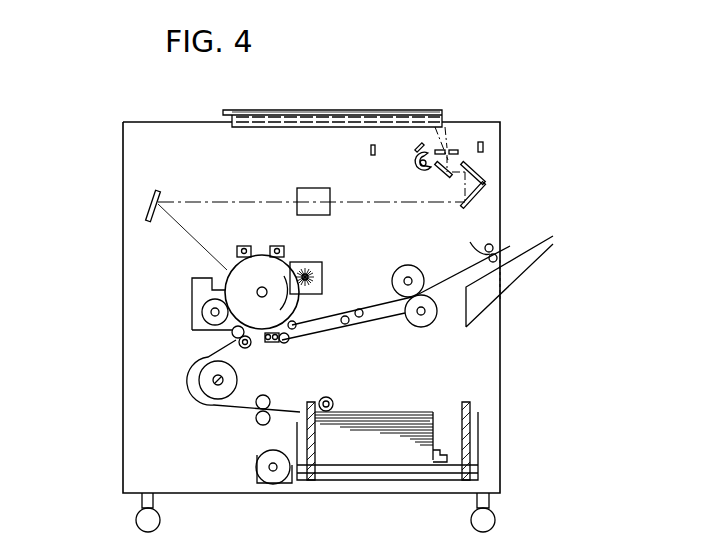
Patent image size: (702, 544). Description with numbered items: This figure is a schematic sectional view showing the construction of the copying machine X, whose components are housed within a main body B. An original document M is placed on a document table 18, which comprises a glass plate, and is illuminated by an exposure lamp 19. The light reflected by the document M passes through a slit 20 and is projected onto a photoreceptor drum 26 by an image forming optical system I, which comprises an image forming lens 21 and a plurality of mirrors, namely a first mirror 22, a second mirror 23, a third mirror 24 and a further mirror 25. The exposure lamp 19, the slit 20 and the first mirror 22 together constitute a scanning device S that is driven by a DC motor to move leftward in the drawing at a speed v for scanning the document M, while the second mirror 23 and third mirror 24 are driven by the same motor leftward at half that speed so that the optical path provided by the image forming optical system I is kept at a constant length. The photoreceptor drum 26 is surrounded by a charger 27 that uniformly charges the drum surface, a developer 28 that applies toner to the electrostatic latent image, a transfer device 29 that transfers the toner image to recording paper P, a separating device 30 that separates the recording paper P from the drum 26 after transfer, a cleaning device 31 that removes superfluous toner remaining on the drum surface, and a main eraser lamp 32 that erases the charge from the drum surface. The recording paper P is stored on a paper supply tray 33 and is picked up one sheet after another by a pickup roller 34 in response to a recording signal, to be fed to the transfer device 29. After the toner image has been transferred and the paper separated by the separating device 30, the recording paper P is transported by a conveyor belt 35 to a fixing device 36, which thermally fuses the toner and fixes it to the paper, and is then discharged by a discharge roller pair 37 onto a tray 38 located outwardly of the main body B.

The copying machine X is at (100, 148).
The main body B is at (502, 344).
The original document M is at (405, 118).
The scanning device S is at (470, 160).
The image forming optical system I is at (486, 219).
The recording paper P is at (398, 412).
The document table 18 is at (270, 128).
The exposure lamp 19 is at (415, 158).
The slit 20 is at (447, 147).
The image forming lens 21 is at (312, 188).
The first mirror 22 is at (440, 172).
The second mirror 23 is at (484, 176).
The third mirror 24 is at (482, 194).
The mirror 25 is at (154, 191).
The photoreceptor drum 26 is at (227, 278).
The charger 27 is at (243, 247).
The developer 28 is at (192, 312).
The transfer device 29 is at (268, 345).
The separating device 30 is at (282, 344).
The cleaning device 31 is at (322, 267).
The main eraser lamp 32 is at (282, 244).
The paper supply tray 33 is at (437, 417).
The pickup roller 34 is at (334, 400).
The conveyor belt 35 is at (342, 328).
The fixing device 36 is at (406, 265).
The discharge roller pair 37 is at (483, 247).
The tray 38 is at (530, 267).